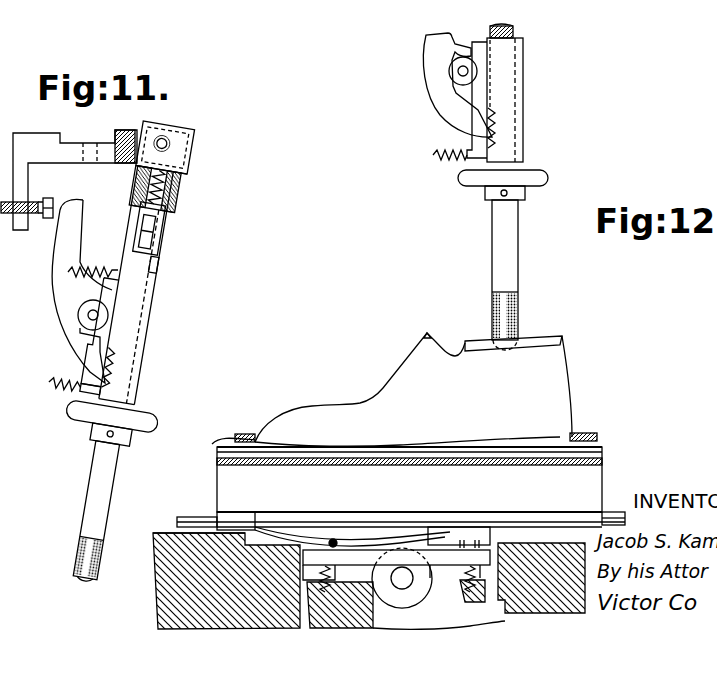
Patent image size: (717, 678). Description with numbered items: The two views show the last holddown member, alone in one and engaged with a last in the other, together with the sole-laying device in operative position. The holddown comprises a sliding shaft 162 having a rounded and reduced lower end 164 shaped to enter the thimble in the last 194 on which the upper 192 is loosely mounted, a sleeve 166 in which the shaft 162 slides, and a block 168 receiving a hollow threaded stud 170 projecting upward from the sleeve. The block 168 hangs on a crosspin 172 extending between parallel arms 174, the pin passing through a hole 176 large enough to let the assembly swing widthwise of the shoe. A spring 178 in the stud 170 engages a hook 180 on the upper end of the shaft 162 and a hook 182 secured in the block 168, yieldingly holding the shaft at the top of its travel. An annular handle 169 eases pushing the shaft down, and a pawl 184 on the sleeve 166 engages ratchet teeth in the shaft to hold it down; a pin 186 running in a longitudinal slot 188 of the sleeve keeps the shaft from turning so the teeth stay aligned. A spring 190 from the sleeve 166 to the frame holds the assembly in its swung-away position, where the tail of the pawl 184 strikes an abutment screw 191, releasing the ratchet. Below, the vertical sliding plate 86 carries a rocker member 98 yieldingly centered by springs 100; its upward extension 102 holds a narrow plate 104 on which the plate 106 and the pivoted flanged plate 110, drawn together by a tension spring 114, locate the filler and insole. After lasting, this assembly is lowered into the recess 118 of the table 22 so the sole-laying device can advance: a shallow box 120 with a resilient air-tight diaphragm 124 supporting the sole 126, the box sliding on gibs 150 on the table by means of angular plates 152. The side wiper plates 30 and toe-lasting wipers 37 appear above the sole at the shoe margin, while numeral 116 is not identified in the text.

In FIG. 12, the table 22 is at (155, 592).
In FIG. 12, the side wiper plates 30 is at (578, 433).
In FIG. 12, the toe-lasting wipers 37 is at (240, 434).
In FIG. 12, the vertical sliding plate 86 is at (455, 621).
In FIG. 12, the rocker member 98 is at (330, 557).
In FIG. 12, the springs 100 is at (322, 572).
In FIG. 12, the upward extension 102 is at (452, 533).
In FIG. 12, the narrow plate 104 is at (405, 527).
In FIG. 12, the plate 106 is at (262, 528).
In FIG. 12, the plate 110 is at (300, 535).
In FIG. 12, the tension spring 114 is at (362, 533).
In FIG. 12, the base top surface 116 is at (205, 533).
In FIG. 12, the recess 118 is at (411, 582).
In FIG. 12, the shallow box 120 is at (409, 479).
In FIG. 12, the diaphragm 124 is at (220, 441).
In FIG. 12, the sole 126 is at (288, 452).
In FIG. 12, the gibs 150 is at (190, 519).
In FIG. 12, the angular plates 152 is at (240, 520).
In FIG. 11, the sliding shaft 162 is at (97, 477).
In FIG. 12, the sliding shaft 162 is at (508, 25).
In FIG. 11, the rounded and reduced lower end 164 is at (78, 590).
In FIG. 12, the rounded and reduced lower end 164 is at (512, 350).
In FIG. 11, the sleeve 166 is at (152, 332).
In FIG. 12, the sleeve 166 is at (523, 100).
In FIG. 11, the block 168 is at (185, 178).
In FIG. 11, the annular handle 169 is at (157, 418).
In FIG. 12, the annular handle 169 is at (547, 175).
In FIG. 11, the hollow threaded stud 170 is at (182, 203).
In FIG. 11, the crosspin 172 is at (165, 138).
In FIG. 11, the parallel arms 174 is at (110, 155).
In FIG. 11, the hole 176 is at (186, 165).
In FIG. 11, the spring 178 is at (175, 212).
In FIG. 11, the hook 180 is at (167, 238).
In FIG. 11, the hook 182 is at (143, 183).
In FIG. 11, the pawl 184 is at (62, 330).
In FIG. 12, the pawl 184 is at (442, 105).
In FIG. 11, the pin 186 is at (140, 268).
In FIG. 11, the longitudinal slot 188 is at (153, 263).
In FIG. 11, the spring 190 is at (62, 410).
In FIG. 12, the spring 190 is at (435, 157).
In FIG. 11, the screw 191 is at (33, 231).
In FIG. 12, the upper 192 is at (413, 389).
In FIG. 12, the last 194 is at (477, 343).